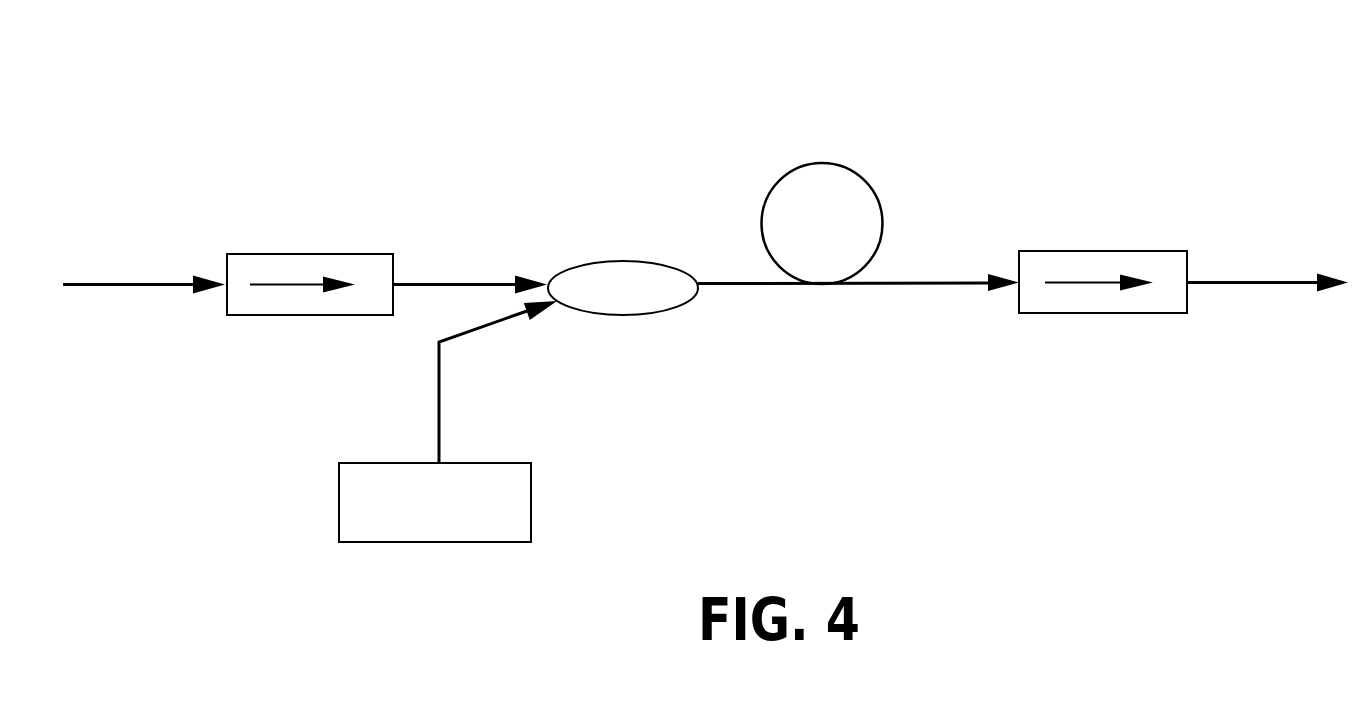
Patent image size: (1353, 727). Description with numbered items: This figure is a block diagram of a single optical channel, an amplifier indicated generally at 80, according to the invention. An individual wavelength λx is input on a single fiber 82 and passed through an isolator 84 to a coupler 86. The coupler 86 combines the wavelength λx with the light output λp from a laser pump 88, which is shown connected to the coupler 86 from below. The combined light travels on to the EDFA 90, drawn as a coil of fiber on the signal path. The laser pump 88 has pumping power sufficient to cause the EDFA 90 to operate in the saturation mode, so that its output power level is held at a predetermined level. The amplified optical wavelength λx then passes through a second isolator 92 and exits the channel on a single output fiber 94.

The fiber laser system 80 is at (773, 92).
The single fiber 82 is at (122, 283).
The isolator 84 is at (305, 254).
The coupler 86 is at (608, 261).
The laser pump 88 is at (533, 500).
The EDFA 90 is at (866, 181).
The isolator 92 is at (1098, 251).
The single output fiber 94 is at (1245, 279).